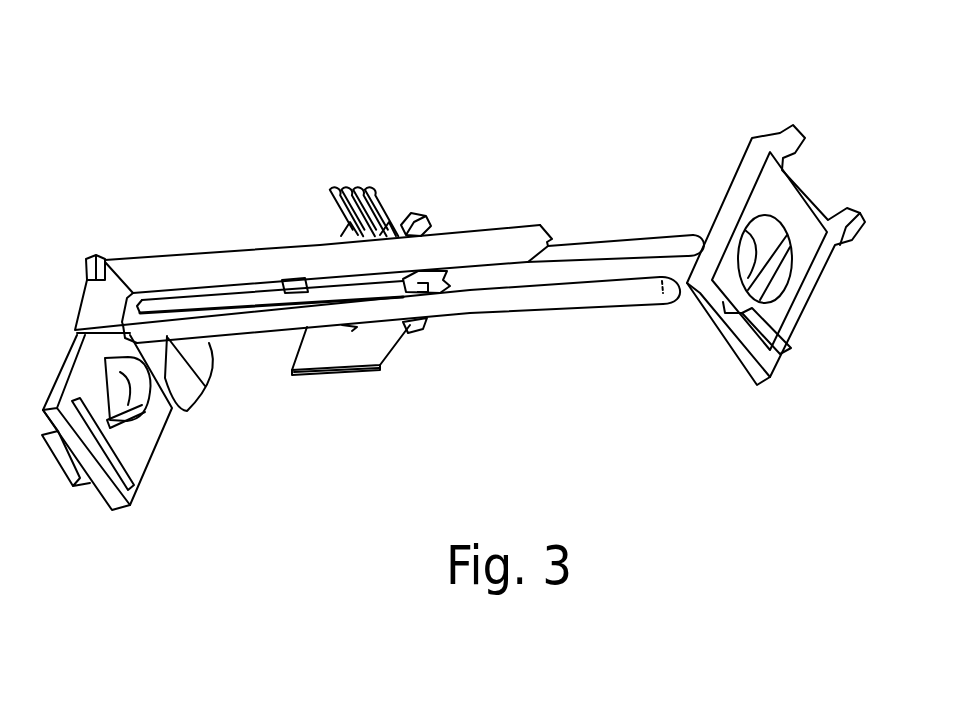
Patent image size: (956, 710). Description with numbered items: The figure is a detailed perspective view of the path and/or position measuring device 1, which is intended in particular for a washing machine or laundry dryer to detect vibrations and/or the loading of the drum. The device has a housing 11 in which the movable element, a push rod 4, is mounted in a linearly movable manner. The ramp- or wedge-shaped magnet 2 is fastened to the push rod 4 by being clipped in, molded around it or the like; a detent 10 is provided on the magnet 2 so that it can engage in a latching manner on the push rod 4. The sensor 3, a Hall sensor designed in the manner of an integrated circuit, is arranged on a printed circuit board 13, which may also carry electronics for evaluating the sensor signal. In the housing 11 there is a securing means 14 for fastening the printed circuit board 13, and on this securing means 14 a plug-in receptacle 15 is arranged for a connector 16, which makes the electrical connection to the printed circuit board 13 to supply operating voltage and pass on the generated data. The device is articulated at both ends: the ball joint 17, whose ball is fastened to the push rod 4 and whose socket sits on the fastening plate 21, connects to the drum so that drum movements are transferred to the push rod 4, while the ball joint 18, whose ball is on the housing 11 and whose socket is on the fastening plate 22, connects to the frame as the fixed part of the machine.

The path and/or position measuring device 1 is at (453, 292).
The magnet 2 is at (316, 285).
The sensor 3 is at (343, 342).
The push rod 4 is at (593, 247).
The detent 10 is at (430, 292).
The housing 11 is at (137, 267).
The printed circuit board 13 is at (362, 355).
The securing means 14 is at (418, 333).
The plug-in receptacle 15 is at (424, 228).
The connector 16 is at (385, 205).
The ball joint 17 is at (691, 337).
The ball joint 18 is at (183, 440).
The fastening plate 21 is at (753, 155).
The fastening plate 22 is at (91, 462).